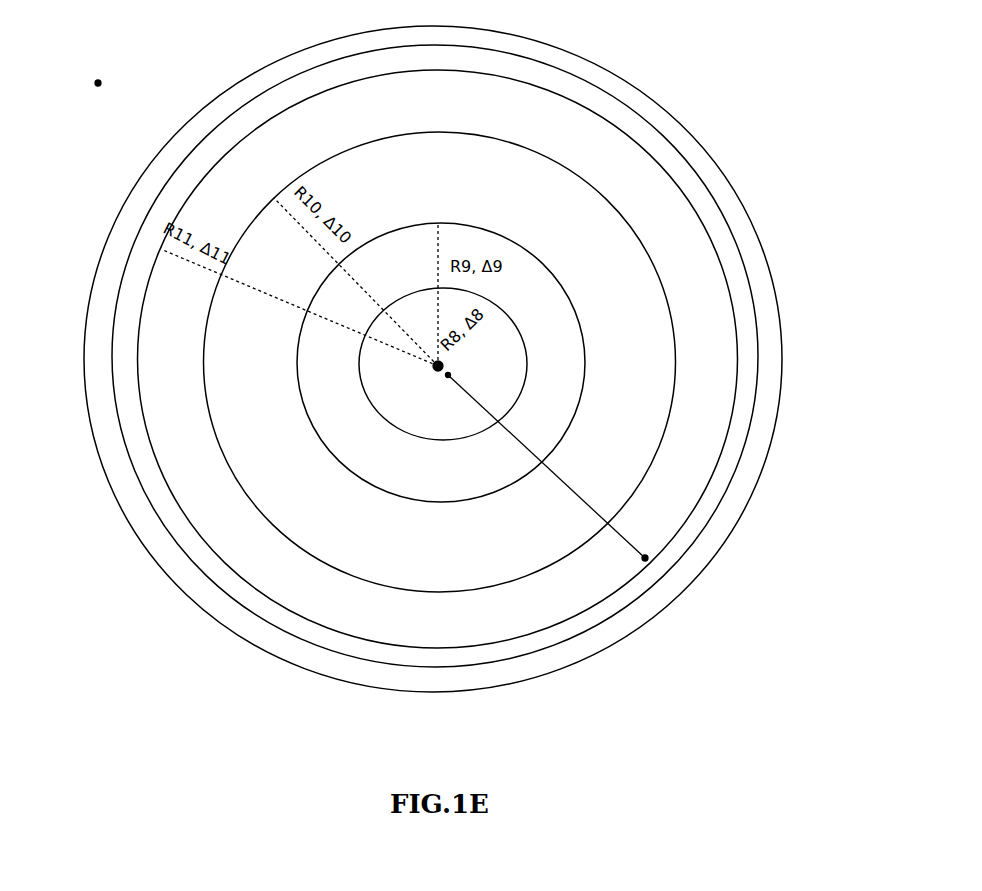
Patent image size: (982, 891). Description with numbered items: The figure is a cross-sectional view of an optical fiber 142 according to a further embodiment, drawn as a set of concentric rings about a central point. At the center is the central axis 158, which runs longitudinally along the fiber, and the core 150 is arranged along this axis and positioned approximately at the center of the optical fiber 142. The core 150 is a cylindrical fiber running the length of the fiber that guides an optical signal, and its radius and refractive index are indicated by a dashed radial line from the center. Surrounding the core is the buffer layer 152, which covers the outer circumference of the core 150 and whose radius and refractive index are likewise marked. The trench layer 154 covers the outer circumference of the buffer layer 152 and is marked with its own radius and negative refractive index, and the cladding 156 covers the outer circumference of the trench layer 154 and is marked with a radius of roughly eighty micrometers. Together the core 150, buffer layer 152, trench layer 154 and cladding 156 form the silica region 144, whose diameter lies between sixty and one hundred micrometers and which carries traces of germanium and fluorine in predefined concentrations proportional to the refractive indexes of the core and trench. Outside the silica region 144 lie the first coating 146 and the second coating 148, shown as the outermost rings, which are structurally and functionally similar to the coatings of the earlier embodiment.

The optical fiber 142 is at (98, 83).
The silica region 144 is at (584, 496).
The first coating 146 is at (731, 259).
The second coating 148 is at (717, 168).
The core 150 is at (437, 412).
The buffer layer 152 is at (387, 462).
The trench layer 154 is at (440, 362).
The cladding 156 is at (302, 582).
The central axis 158 is at (434, 368).